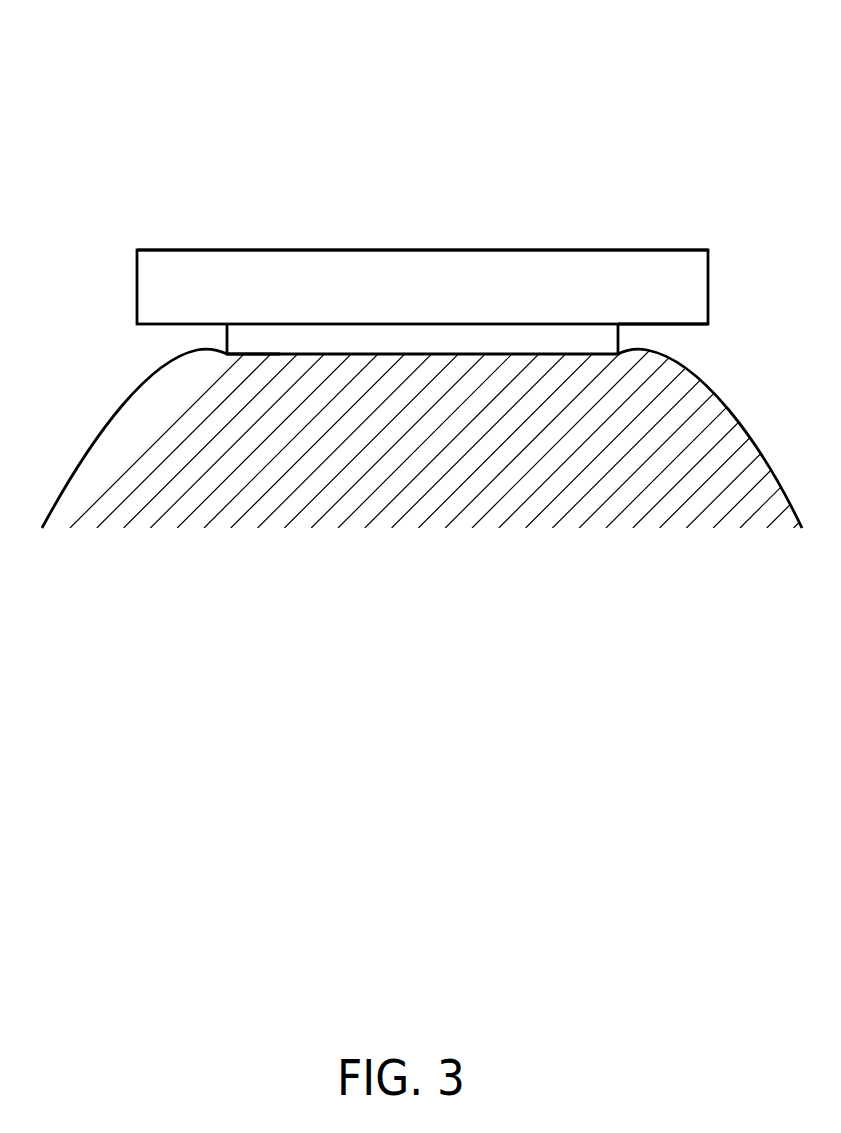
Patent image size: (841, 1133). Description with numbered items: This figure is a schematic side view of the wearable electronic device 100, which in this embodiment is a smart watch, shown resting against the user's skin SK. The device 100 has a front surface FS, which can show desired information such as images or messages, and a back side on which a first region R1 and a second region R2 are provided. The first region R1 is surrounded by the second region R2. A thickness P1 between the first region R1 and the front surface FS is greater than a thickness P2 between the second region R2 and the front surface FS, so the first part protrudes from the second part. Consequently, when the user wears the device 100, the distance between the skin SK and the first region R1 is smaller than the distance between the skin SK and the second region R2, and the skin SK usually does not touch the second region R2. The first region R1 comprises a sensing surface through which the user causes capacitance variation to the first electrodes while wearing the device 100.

The wearable electronic device 100 is at (612, 85).
The front surface FS is at (425, 250).
The user's skin SK is at (620, 498).
The first region R1 is at (270, 354).
The second region R2 is at (660, 324).
The thickness between first region and front surface P1 is at (542, 353).
The thickness between second region and front surface P2 is at (179, 251).